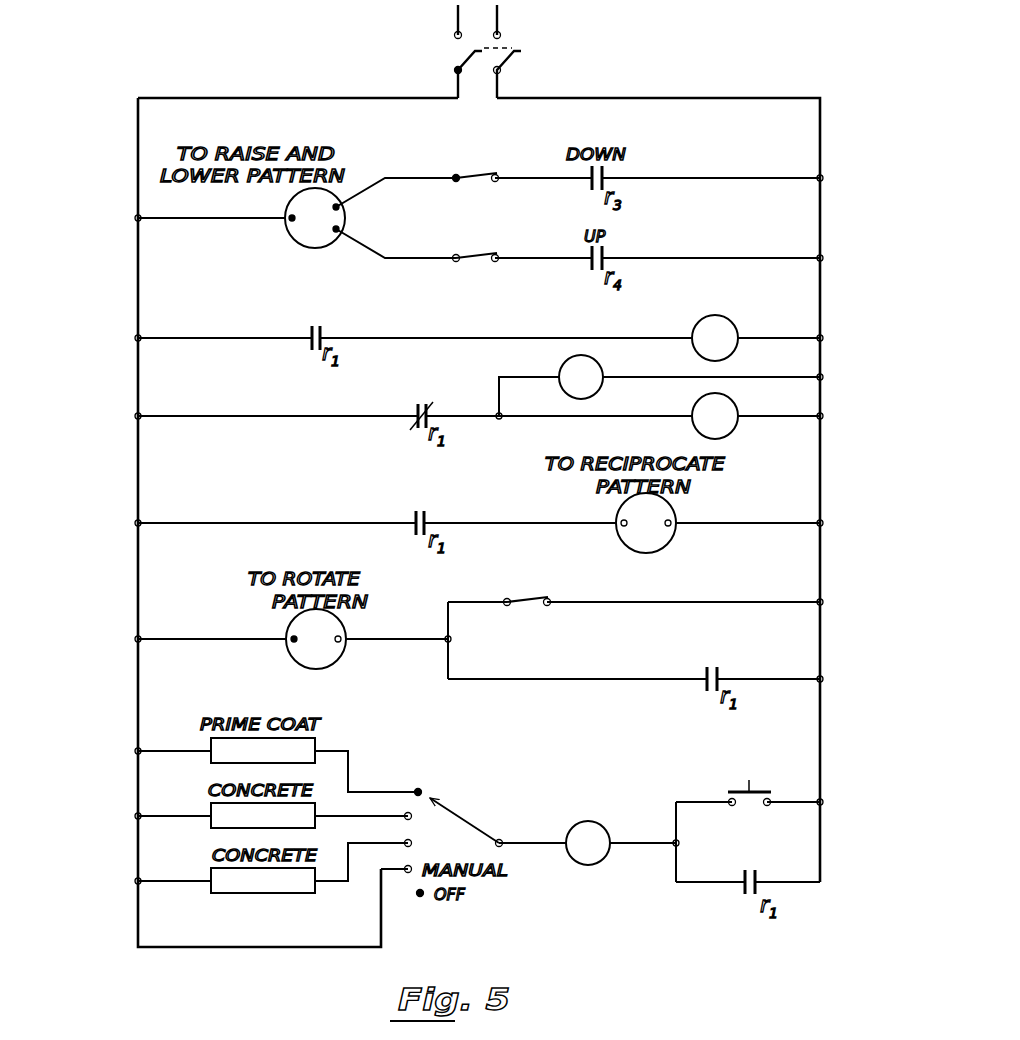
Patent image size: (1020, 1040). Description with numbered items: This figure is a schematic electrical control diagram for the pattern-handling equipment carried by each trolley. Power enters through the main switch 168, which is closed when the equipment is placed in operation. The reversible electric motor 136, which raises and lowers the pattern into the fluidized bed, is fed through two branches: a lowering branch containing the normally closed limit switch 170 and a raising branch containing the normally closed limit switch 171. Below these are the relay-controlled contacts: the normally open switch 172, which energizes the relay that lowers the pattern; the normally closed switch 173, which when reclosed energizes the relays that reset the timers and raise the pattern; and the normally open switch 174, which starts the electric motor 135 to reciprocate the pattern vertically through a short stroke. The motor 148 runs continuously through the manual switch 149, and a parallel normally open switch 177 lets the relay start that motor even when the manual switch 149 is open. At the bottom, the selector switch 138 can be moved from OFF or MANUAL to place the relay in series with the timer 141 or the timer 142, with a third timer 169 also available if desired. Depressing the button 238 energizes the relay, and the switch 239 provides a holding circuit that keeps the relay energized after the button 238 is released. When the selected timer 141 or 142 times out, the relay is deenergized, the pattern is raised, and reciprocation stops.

The main switch 168 is at (452, 60).
The normally closed limit switch 170 is at (476, 176).
The normally closed limit switch 171 is at (476, 256).
The reversible electric motor 136 is at (291, 240).
The normally open switch 172 is at (307, 331).
The normally closed switch 173 is at (412, 412).
The normally open switch 174 is at (410, 518).
The electric motor 135 is at (672, 545).
The manual switch 149 is at (530, 598).
The motor 148 is at (336, 663).
The normally open switch 177 is at (700, 672).
The timer 141 is at (210, 762).
The timer 142 is at (212, 828).
The third timer 169 is at (222, 894).
The selector switch 138 is at (468, 823).
The button 238 is at (740, 796).
The switch 239 is at (740, 898).